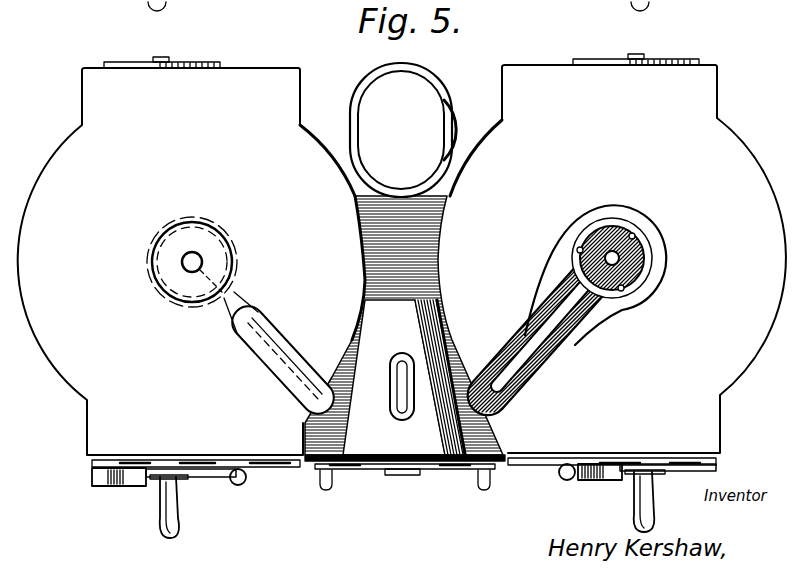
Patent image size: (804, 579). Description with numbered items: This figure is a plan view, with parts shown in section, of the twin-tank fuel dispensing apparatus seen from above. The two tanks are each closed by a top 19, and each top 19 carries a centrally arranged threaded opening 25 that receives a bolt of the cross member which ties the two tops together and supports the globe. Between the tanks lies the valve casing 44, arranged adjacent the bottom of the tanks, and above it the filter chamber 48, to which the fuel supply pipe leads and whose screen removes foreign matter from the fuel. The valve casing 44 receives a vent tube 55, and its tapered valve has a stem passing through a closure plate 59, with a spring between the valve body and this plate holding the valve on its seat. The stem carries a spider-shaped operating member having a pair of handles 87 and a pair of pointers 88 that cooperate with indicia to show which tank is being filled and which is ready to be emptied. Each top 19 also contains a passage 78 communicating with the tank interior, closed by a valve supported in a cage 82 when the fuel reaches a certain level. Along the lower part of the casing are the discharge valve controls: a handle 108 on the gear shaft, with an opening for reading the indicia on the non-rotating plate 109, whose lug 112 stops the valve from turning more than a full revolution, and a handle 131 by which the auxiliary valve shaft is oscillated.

The top 19 is at (308, 144).
The threaded opening 25 is at (200, 258).
The valve casing 44 is at (362, 312).
The filter chamber 48 is at (441, 86).
The vent tube 55 is at (402, 354).
The closure plate 59 is at (505, 466).
The passage 78 is at (252, 335).
The cage 82 is at (643, 250).
The handle 87 is at (320, 487).
The pointer 88 is at (350, 470).
The handle 108 is at (162, 522).
The plate 109 is at (225, 478).
The lug 112 is at (124, 487).
The handle 131 is at (247, 476).